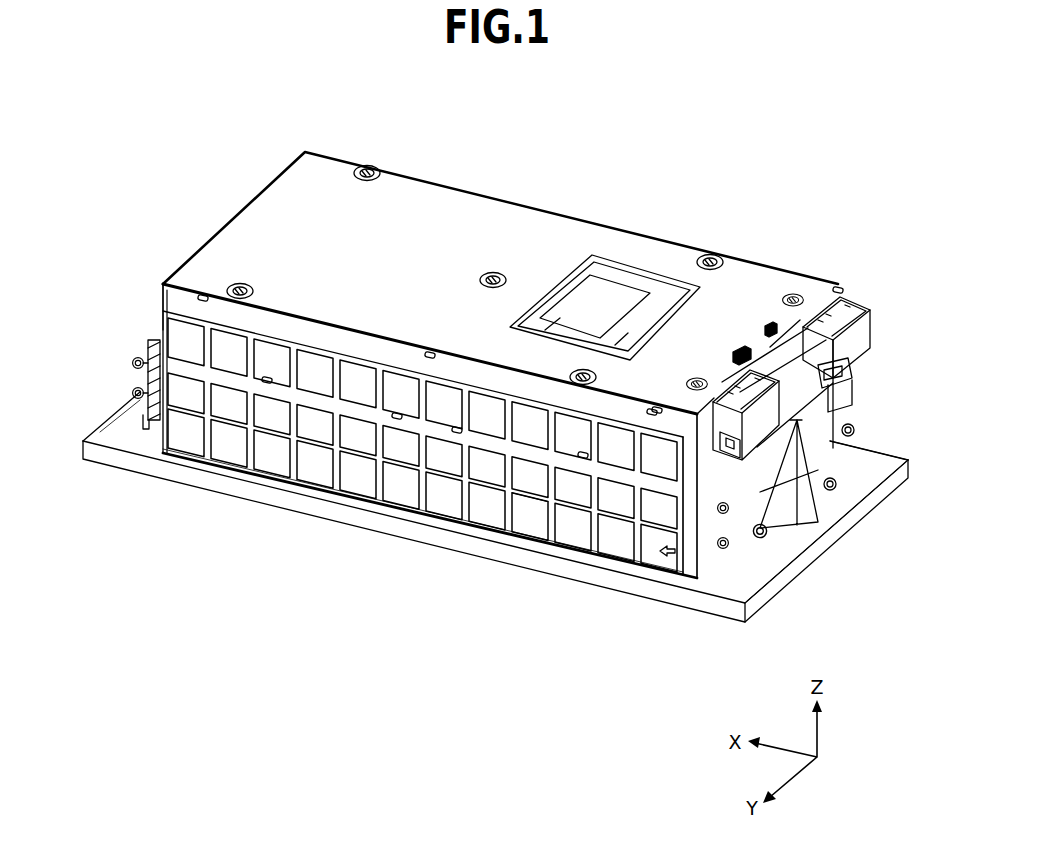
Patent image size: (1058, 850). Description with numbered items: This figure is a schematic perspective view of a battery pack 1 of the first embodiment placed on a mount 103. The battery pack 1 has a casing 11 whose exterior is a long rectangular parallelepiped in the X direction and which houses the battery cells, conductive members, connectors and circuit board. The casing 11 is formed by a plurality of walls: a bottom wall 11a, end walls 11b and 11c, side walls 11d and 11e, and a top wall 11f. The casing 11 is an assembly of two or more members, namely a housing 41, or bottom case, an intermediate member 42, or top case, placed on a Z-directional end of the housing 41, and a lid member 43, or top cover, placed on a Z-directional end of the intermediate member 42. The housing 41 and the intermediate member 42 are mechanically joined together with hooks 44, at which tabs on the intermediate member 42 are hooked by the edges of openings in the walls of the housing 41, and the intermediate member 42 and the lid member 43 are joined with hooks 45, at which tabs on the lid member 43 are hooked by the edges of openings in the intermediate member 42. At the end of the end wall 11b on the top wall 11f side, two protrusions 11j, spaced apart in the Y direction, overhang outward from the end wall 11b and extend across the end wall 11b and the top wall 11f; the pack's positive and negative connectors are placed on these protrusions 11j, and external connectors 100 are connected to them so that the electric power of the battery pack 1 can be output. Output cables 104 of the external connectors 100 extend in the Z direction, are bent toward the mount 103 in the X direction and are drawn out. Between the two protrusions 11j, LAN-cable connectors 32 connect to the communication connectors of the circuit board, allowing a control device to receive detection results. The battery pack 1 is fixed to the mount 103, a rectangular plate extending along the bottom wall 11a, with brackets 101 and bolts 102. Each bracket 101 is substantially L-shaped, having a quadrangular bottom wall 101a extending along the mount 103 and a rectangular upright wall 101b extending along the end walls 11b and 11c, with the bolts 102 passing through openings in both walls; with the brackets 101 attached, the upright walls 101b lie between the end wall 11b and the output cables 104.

The battery pack 1 is at (304, 148).
The casing 11 is at (404, 166).
The bottom wall 11a is at (440, 518).
The end wall 11b is at (735, 428).
The end wall 11c is at (157, 320).
The side wall 11d is at (535, 522).
The side wall 11e is at (612, 224).
The top wall 11f is at (462, 228).
The protrusion 11j is at (832, 297).
The connector of LAN cable 32 is at (785, 338).
The housing 41 is at (360, 478).
The intermediate member 42 is at (177, 302).
The lid member 43 is at (232, 237).
The hook 44 is at (266, 394).
The hook 45 is at (204, 282).
The external connector 100 is at (863, 313).
The bracket 101 is at (150, 432).
The bottom wall 101a is at (808, 516).
The upright wall 101b is at (828, 443).
The bolt 102 is at (131, 393).
The mount 103 is at (100, 432).
The output cable 104 is at (850, 387).